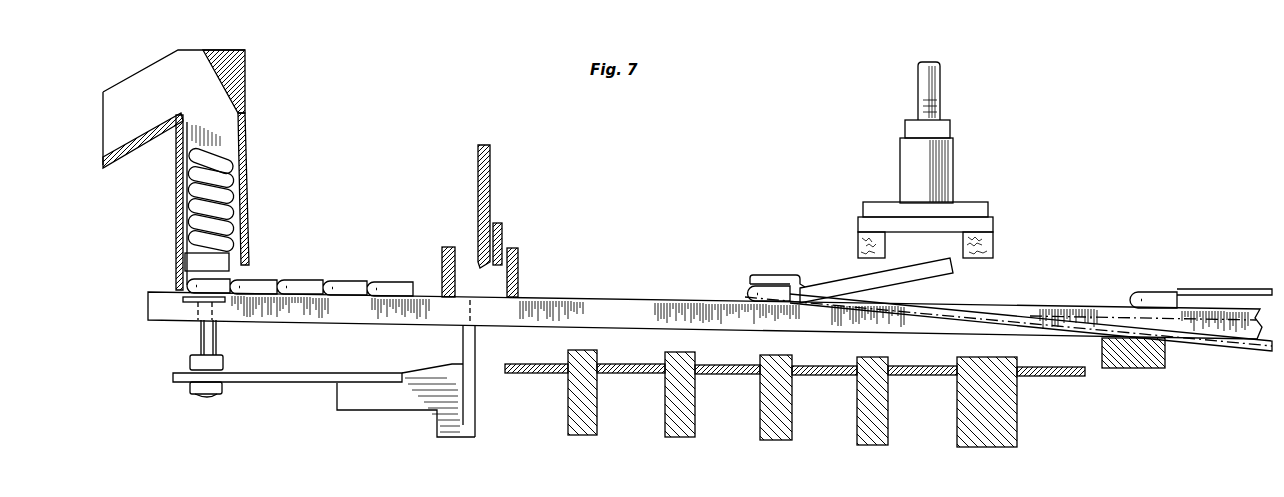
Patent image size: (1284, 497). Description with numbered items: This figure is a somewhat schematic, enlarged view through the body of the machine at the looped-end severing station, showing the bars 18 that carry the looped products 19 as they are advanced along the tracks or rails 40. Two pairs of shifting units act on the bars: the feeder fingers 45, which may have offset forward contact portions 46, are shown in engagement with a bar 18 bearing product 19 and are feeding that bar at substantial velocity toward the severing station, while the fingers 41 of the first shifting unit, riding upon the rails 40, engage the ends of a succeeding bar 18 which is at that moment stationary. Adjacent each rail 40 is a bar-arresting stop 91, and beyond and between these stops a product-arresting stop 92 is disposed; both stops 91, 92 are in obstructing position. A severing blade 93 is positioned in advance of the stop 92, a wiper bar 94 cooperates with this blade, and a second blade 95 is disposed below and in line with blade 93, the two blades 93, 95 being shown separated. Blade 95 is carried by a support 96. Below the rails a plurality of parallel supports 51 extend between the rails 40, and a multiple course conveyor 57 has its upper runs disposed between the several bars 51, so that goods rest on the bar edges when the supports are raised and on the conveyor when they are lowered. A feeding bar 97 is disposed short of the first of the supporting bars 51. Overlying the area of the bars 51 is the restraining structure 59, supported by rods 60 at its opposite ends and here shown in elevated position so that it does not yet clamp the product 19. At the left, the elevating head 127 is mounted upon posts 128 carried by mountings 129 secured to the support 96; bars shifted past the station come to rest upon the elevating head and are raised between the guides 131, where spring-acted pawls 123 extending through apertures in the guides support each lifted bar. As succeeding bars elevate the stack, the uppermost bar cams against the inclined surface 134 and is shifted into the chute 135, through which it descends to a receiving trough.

The bar 18 is at (293, 283).
The looped product 19 is at (927, 302).
The rail 40 is at (652, 312).
The finger 41 is at (1237, 290).
The finger 45 is at (850, 282).
The offset forward contact portion 46 is at (787, 273).
The support 51 is at (688, 410).
The multiple course conveyor 57 is at (623, 373).
The restraining structure 59 is at (993, 243).
The rod 60 is at (941, 92).
The bar-arresting stop 91 is at (519, 253).
The product-arresting stop 92 is at (440, 250).
The severing blade 93 is at (491, 160).
The wiper bar 94 is at (501, 223).
The second blade 95 is at (476, 343).
The support 96 is at (450, 363).
The feeding bar 97 is at (1127, 368).
The pawl 123 is at (220, 260).
The elevating head 127 is at (178, 303).
The post 128 is at (214, 350).
The mounting 129 is at (335, 362).
The guide 131 is at (222, 135).
The inclined surface 134 is at (233, 82).
The chute 135 is at (130, 156).